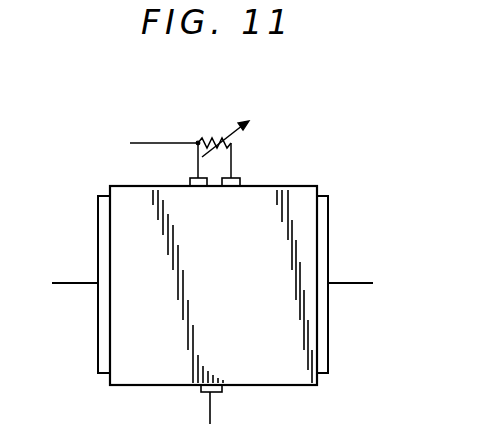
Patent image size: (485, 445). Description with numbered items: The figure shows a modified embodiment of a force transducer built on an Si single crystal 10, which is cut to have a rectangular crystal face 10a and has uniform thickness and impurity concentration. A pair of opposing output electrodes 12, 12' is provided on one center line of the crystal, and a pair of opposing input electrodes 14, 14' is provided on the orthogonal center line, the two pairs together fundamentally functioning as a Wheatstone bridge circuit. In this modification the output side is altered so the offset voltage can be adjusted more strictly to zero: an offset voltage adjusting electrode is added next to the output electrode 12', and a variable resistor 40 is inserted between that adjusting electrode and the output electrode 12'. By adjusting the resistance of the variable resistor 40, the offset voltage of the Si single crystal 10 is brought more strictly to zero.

The Si single crystal 10 is at (361, 150).
The crystal face 10a is at (300, 202).
The output electrode 12 is at (233, 404).
The output electrode 12' is at (254, 162).
The input electrode 14 is at (348, 284).
The input electrode 14' is at (70, 284).
The variable resistor 40 is at (214, 148).